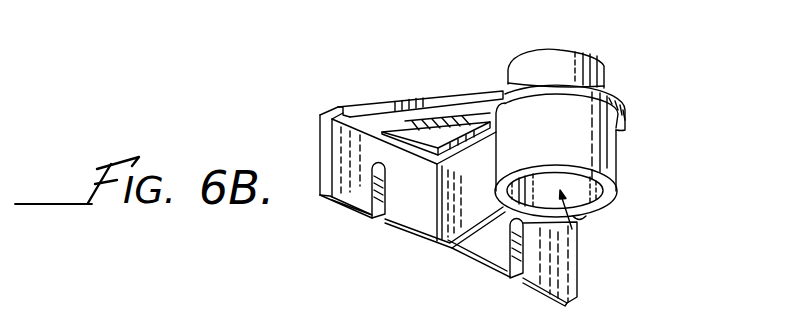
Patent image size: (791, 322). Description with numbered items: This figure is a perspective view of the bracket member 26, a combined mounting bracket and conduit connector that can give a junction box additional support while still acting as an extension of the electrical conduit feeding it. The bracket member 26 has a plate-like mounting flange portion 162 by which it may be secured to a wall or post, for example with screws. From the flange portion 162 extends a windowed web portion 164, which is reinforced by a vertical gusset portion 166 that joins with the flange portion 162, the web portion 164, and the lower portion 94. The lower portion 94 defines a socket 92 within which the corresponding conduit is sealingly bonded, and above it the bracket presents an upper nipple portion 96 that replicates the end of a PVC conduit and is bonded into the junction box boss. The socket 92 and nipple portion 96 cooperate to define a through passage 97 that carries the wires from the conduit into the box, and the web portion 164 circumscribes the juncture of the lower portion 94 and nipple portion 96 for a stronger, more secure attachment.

The bracket member 26 is at (597, 23).
The socket 92 is at (594, 200).
The lower portion 94 is at (616, 156).
The upper nipple portion 96 is at (549, 51).
The through passage 97 is at (572, 229).
The mounting flange portion 162 is at (410, 217).
The windowed web portion 164 is at (428, 112).
The vertical gusset portion 166 is at (450, 246).